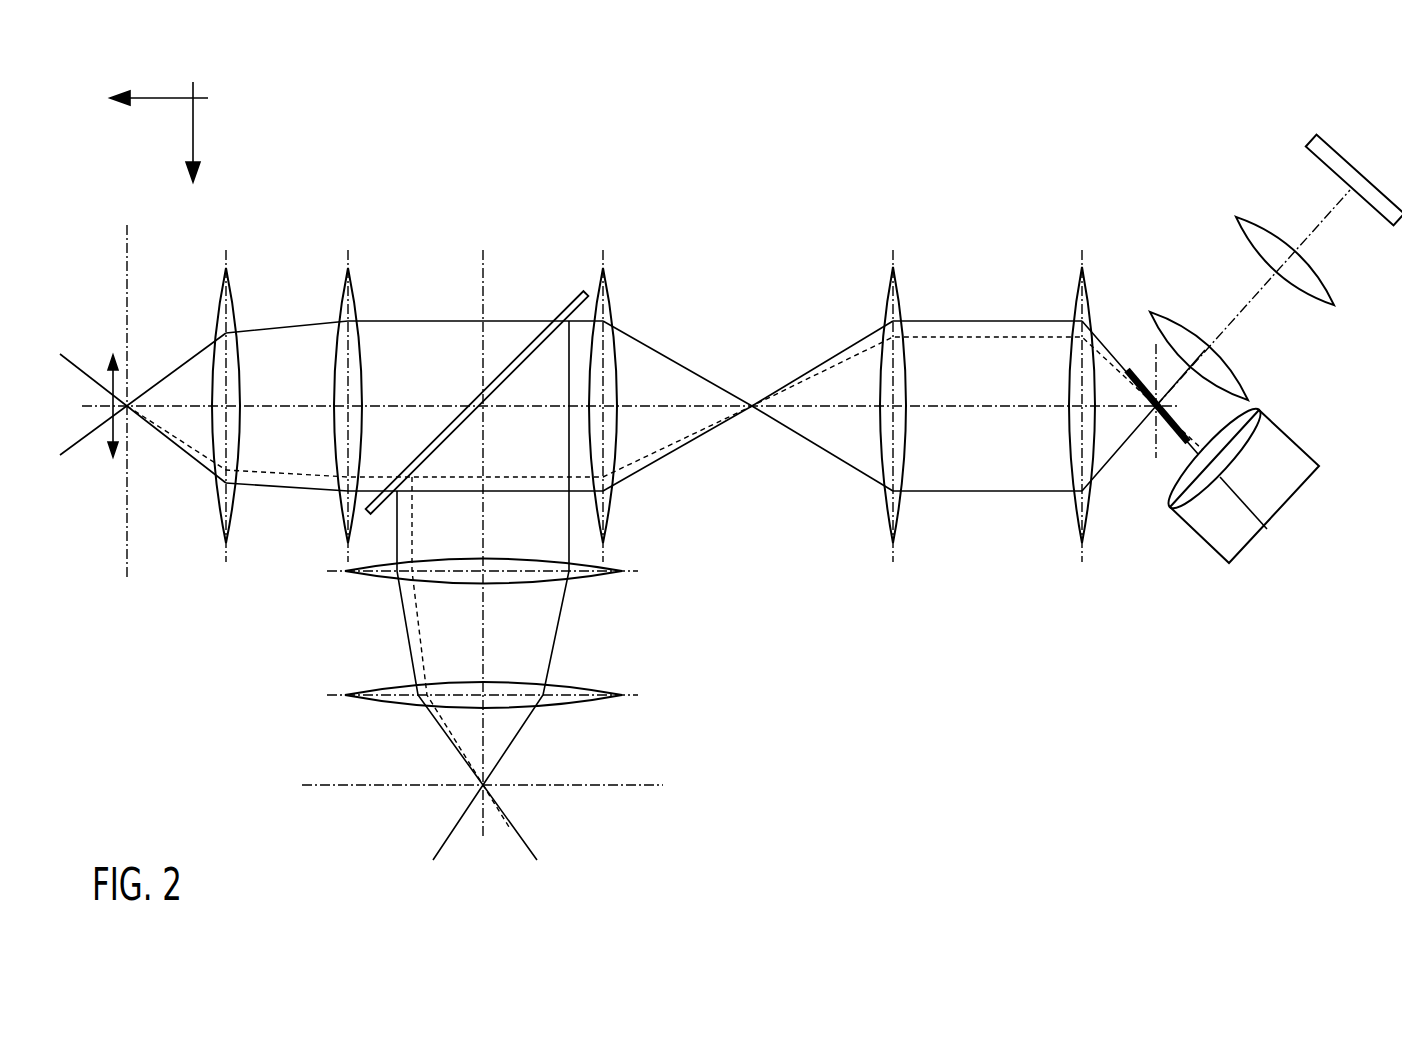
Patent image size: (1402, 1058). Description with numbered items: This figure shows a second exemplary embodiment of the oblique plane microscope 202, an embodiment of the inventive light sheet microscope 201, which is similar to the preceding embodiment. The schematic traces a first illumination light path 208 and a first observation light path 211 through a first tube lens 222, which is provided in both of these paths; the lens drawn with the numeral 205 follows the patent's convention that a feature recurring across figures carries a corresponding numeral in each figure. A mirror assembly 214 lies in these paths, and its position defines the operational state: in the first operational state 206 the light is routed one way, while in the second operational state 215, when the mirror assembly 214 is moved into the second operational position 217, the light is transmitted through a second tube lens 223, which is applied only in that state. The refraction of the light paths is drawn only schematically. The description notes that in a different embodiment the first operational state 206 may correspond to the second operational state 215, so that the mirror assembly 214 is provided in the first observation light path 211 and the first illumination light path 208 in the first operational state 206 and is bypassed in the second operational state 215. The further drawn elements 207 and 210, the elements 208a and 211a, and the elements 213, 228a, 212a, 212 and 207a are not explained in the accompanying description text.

The light sheet microscope 201 is at (731, 451).
The oblique plane microscope 202 is at (731, 451).
The lens 205 is at (254, 382).
The first operational state 206 is at (235, 290).
The first tube lens 222 is at (357, 290).
The first illumination light path 208 is at (430, 318).
The marginal ray (upper, detection branch) 208a is at (985, 321).
The first observation light path 211 is at (263, 491).
The marginal ray (lower, detection branch) 211a is at (987, 491).
The mirror assembly 214 is at (488, 367).
The second operational state 215 is at (471, 540).
The second operational position 217 is at (563, 298).
The ray 207 is at (820, 365).
The ray 210 is at (818, 447).
The second tube lens 223 is at (592, 582).
The lens 213 is at (592, 705).
The deflection mirror 228a is at (1183, 441).
The lens group 212a is at (1239, 269).
The detector plate 212 is at (1378, 178).
The detector 207a is at (1283, 432).